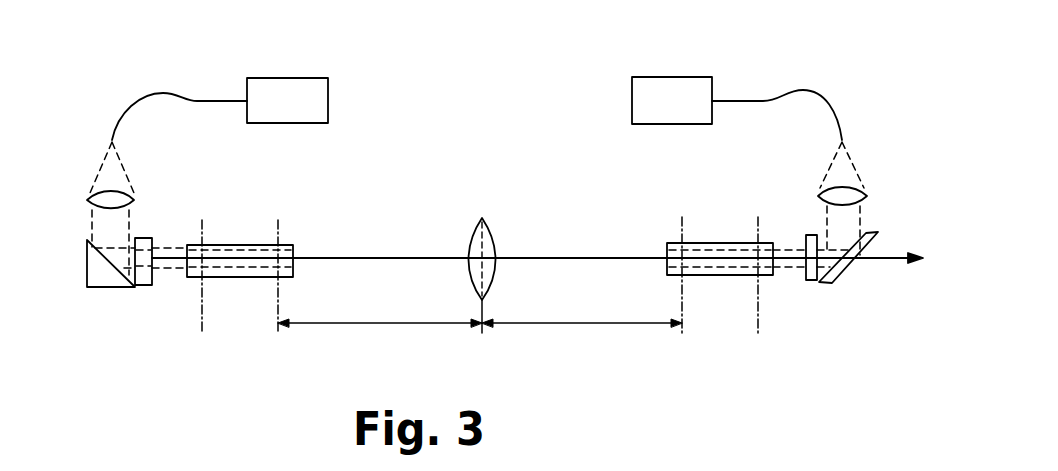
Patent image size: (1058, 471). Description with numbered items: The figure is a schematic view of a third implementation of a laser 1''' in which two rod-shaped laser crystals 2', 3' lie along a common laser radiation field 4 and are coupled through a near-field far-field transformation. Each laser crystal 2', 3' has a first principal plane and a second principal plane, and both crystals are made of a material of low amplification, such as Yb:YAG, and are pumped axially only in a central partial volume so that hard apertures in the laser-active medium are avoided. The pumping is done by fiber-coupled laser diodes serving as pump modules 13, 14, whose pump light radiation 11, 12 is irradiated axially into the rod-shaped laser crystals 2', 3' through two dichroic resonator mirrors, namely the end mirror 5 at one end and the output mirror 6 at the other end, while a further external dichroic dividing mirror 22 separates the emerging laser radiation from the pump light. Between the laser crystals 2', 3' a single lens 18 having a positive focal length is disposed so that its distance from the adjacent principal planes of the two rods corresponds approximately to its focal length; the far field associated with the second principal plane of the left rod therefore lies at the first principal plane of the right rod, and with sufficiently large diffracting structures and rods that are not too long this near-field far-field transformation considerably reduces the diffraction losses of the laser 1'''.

The laser 1''' is at (475, 184).
The rod-shaped laser crystal 2' is at (240, 227).
The rod-shaped laser crystal 3' is at (720, 226).
The laser radiation field 4 is at (398, 258).
The end mirror 5 is at (140, 240).
The output mirror 6 is at (808, 240).
The pump light radiation 11 is at (103, 163).
The pump light radiation 12 is at (848, 156).
The pump module 13 is at (310, 102).
The pump module 14 is at (648, 100).
The lens 18 is at (485, 241).
The external dichroic dividing mirror 22 is at (836, 278).